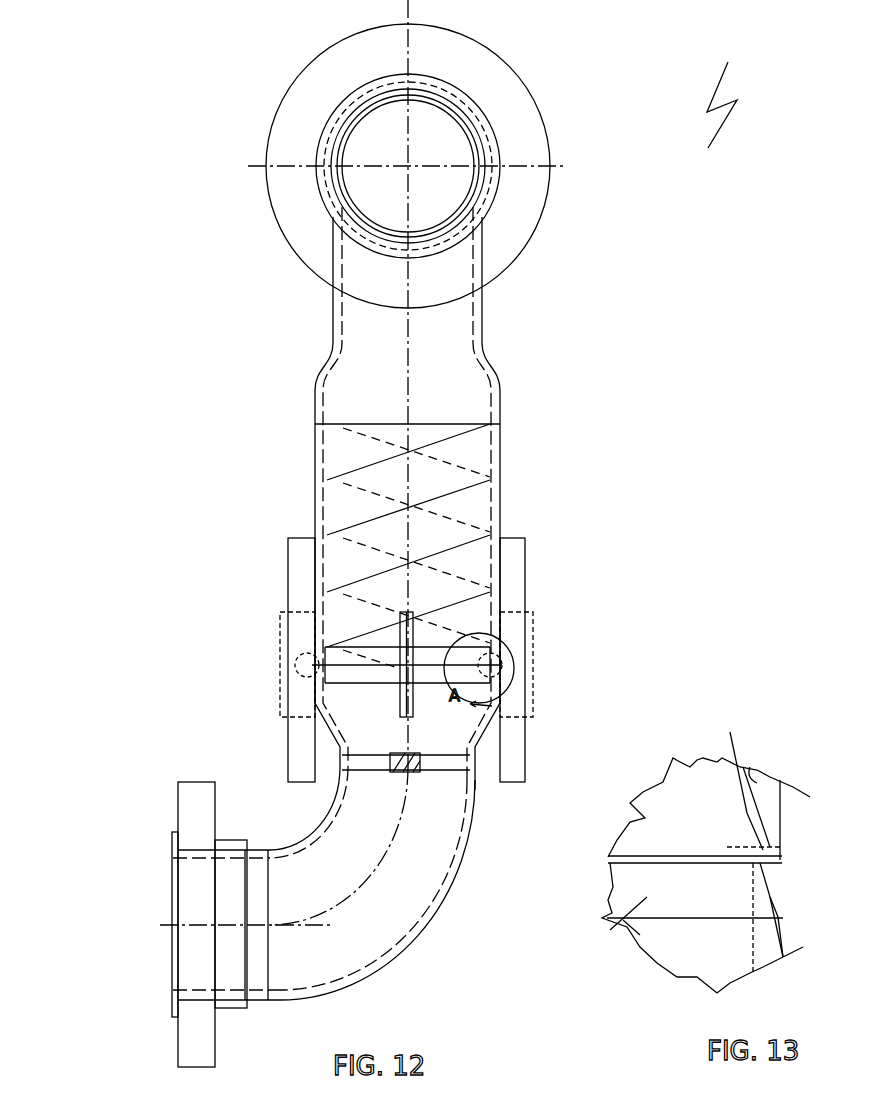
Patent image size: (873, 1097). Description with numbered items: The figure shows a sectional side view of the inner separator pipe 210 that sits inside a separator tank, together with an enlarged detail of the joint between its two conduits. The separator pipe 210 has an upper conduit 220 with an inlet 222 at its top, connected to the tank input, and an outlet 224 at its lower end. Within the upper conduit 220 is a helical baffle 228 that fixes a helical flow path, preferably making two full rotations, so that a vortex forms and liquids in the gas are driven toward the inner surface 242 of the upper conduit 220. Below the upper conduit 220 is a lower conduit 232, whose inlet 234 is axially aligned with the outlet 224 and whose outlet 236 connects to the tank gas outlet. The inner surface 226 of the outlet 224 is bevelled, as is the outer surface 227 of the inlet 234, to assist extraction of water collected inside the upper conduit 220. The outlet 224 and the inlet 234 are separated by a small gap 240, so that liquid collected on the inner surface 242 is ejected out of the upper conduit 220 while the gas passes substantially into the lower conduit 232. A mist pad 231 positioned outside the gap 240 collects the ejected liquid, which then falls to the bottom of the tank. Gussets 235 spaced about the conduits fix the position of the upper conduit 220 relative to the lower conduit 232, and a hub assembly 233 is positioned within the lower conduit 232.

In FIG. 12, the inner separator pipe 210 is at (734, 90).
In FIG. 12, the upper conduit 220 is at (313, 405).
In FIG. 13, the upper conduit 220 is at (643, 823).
In FIG. 12, the inlet 222 is at (475, 213).
In FIG. 12, the outlet 224 is at (395, 645).
In FIG. 13, the outlet 224 is at (780, 847).
In FIG. 13, the inner surface 226 is at (746, 779).
In FIG. 13, the outer surface 227 is at (777, 900).
In FIG. 12, the helical baffle 228 is at (348, 527).
In FIG. 12, the mist pad 231 is at (510, 583).
In FIG. 12, the lower conduit 232 is at (453, 877).
In FIG. 13, the lower conduit 232 is at (623, 920).
In FIG. 12, the hub assembly 233 is at (373, 762).
In FIG. 12, the inlet 234 is at (335, 668).
In FIG. 13, the inlet 234 is at (610, 866).
In FIG. 12, the gussets 235 is at (303, 613).
In FIG. 12, the outlet 236 is at (175, 928).
In FIG. 13, the gap 240 is at (763, 863).
In FIG. 13, the inner surface 242 is at (750, 767).